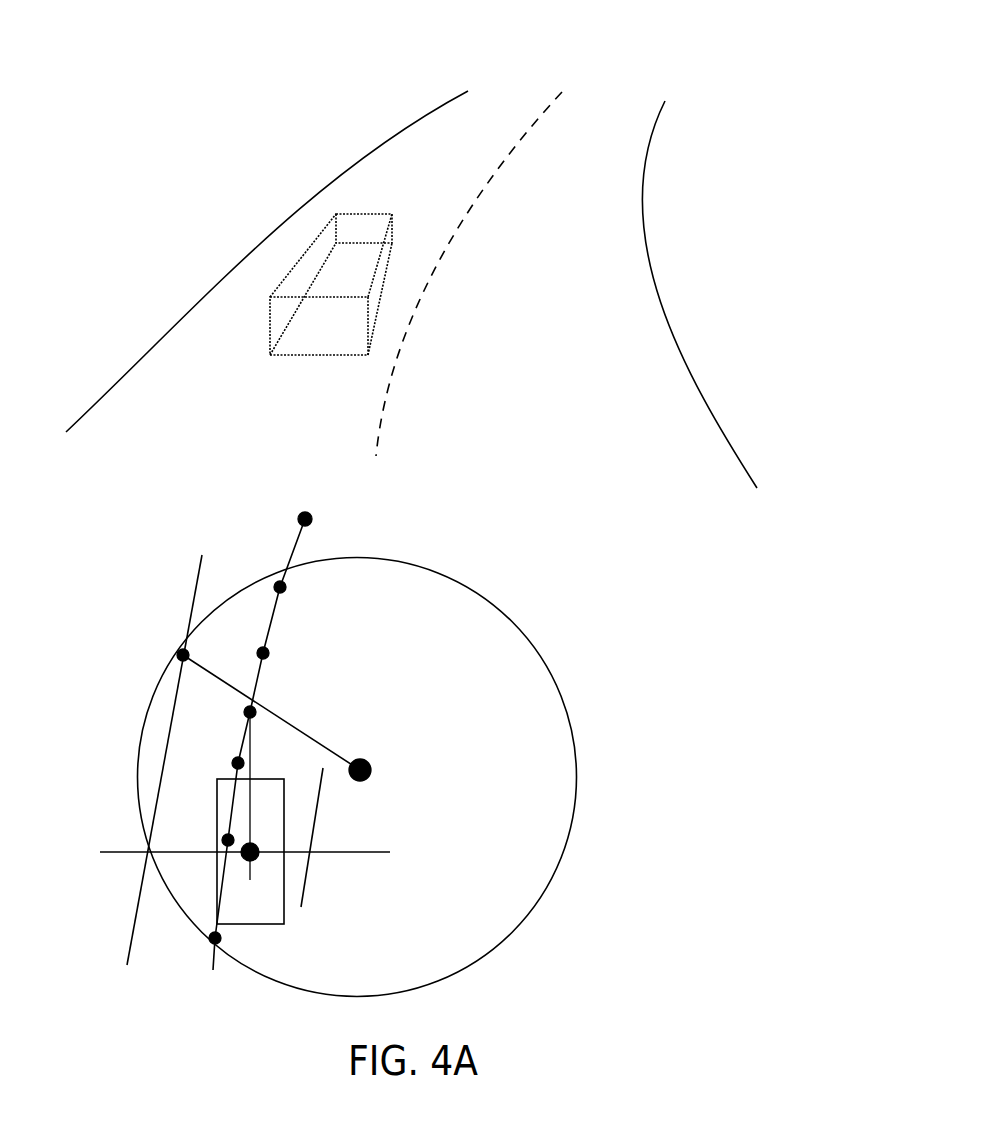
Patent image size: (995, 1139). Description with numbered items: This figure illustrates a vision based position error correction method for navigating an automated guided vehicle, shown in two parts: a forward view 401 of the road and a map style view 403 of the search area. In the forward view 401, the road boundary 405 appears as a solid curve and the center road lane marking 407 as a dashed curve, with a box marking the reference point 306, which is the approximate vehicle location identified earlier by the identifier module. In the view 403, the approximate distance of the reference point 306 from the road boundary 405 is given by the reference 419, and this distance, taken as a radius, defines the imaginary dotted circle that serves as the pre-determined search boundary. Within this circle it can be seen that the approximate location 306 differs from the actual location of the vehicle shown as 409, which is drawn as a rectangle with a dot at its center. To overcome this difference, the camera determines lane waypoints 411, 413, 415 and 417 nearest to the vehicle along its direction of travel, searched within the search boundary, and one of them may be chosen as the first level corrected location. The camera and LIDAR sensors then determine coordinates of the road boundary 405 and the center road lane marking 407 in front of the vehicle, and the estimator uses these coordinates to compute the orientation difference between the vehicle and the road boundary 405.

The camera view of road 401 is at (699, 248).
The pre-determined search boundary view 403 is at (370, 761).
The road boundary 405 is at (267, 528).
The center road lane marking 407 is at (431, 505).
The reference point 306 is at (345, 509).
The actual location of the AGV 409 is at (250, 851).
The lane waypoint 411 is at (245, 835).
The lane waypoint 413 is at (213, 756).
The lane waypoint 415 is at (219, 789).
The lane waypoint 417 is at (260, 741).
The approximate distance from reference point to road boundary 419 is at (268, 709).